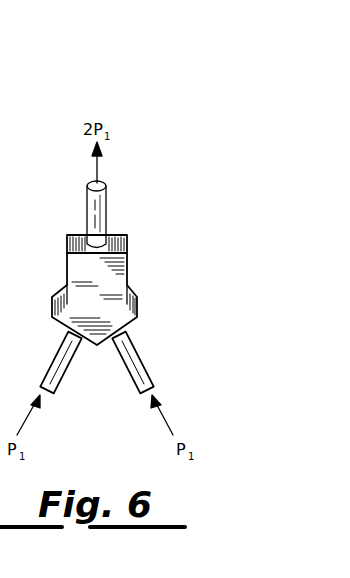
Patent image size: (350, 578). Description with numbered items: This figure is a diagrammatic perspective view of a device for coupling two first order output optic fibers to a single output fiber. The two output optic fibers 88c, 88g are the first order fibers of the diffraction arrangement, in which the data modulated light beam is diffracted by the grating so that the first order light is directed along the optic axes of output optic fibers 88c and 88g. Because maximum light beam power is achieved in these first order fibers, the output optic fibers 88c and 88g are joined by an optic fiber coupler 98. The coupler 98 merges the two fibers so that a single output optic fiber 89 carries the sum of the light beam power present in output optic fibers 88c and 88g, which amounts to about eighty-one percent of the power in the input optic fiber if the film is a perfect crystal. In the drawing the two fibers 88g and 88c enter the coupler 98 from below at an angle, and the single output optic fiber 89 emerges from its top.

The output optic fiber 89 is at (107, 197).
The optic fiber coupler 98 is at (127, 268).
The output optic fiber 88g is at (57, 352).
The output optic fiber 88c is at (131, 355).